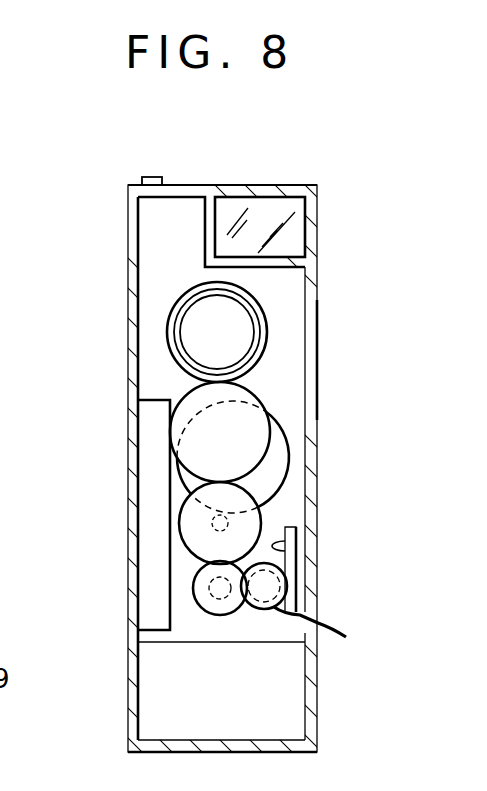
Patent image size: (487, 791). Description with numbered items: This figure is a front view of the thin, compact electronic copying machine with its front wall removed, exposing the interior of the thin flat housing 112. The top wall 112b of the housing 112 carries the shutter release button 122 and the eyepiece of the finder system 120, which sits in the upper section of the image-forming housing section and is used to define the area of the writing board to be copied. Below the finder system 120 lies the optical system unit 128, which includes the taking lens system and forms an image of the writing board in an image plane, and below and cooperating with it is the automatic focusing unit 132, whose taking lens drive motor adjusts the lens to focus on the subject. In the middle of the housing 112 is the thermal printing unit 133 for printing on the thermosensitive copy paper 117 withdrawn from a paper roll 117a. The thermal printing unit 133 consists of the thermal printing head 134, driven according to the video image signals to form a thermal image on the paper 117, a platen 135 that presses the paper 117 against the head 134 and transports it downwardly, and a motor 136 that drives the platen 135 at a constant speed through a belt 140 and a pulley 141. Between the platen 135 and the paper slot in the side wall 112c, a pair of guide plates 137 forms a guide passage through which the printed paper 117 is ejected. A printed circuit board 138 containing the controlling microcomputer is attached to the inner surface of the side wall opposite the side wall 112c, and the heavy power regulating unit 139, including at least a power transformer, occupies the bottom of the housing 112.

The housing 112 is at (110, 272).
The top wall 112b is at (196, 184).
The side wall 112c is at (317, 357).
The shutter release button 122 is at (152, 177).
The finder system 120 is at (296, 228).
The optical system unit 128 is at (245, 332).
The automatic focusing unit 132 is at (257, 391).
The paper roll 117a is at (281, 458).
The motor 136 is at (250, 523).
The thermal printing head 134 is at (288, 545).
The thermosensitive copy paper 117 is at (298, 548).
The platen 135 is at (277, 580).
The guide plates 137 is at (305, 615).
The thermal printing unit 133 is at (413, 476).
The printed circuit board 138 is at (150, 450).
The belt 140 is at (197, 563).
The pulley 141 is at (222, 614).
The power regulating unit 139 is at (287, 688).